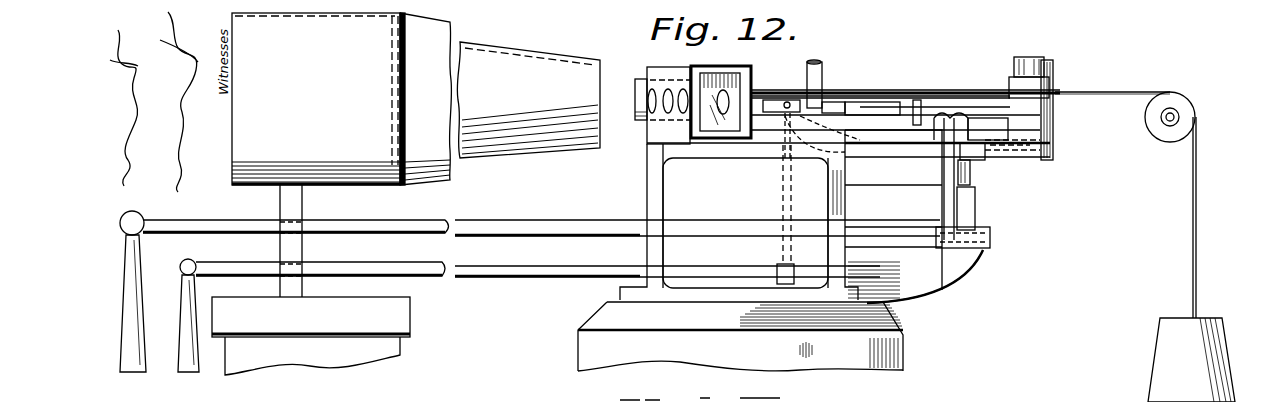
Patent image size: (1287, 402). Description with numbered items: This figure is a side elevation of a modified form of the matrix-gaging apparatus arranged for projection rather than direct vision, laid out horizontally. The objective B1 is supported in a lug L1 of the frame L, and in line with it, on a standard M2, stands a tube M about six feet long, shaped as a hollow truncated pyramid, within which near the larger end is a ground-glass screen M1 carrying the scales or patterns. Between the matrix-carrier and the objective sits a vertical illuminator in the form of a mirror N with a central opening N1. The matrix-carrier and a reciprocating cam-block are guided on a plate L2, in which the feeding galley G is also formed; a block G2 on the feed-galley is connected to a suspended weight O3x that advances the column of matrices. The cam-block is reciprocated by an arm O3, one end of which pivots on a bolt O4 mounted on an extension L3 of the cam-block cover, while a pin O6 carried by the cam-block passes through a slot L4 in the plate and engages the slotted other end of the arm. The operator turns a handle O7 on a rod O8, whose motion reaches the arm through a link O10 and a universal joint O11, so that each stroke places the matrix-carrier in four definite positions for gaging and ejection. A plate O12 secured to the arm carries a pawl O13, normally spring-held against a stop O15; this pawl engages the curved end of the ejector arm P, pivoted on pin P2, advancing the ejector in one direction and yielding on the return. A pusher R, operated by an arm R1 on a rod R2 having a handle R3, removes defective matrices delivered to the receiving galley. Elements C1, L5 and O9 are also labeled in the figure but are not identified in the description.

The tube M is at (500, 102).
The screen M1 is at (398, 80).
The standard M2 is at (302, 206).
The handle O7 is at (150, 212).
The rod O8 is at (541, 217).
The handle R3 is at (194, 262).
The rod R2 is at (538, 282).
The objective B1 is at (641, 79).
The lug L1 is at (678, 65).
The mirror N is at (720, 74).
The central opening N1 is at (746, 88).
The pivot block C1 is at (788, 100).
The feeding galley G is at (824, 100).
The block G2 is at (840, 110).
The pin O6 is at (892, 106).
The extension L3 is at (895, 95).
The plate L2 is at (962, 92).
The universal joint O11 is at (952, 122).
The arm O3 is at (988, 125).
The bolt O4 is at (1032, 75).
The plate O12 is at (1054, 110).
The stop O15 is at (1056, 134).
The pawl O13 is at (975, 152).
The link O10 is at (960, 170).
The arm P is at (893, 210).
The slot L4 is at (893, 173).
The plate L5 is at (914, 248).
The pin P2 is at (960, 195).
The rod end bracket O9 is at (988, 237).
The frame L is at (664, 177).
The pusher R is at (782, 181).
The arm R1 is at (776, 277).
The suspended weight O3x is at (1187, 330).